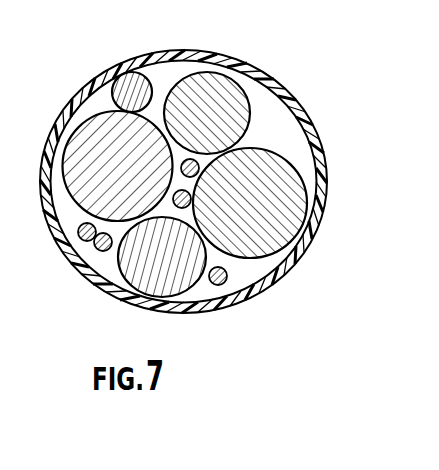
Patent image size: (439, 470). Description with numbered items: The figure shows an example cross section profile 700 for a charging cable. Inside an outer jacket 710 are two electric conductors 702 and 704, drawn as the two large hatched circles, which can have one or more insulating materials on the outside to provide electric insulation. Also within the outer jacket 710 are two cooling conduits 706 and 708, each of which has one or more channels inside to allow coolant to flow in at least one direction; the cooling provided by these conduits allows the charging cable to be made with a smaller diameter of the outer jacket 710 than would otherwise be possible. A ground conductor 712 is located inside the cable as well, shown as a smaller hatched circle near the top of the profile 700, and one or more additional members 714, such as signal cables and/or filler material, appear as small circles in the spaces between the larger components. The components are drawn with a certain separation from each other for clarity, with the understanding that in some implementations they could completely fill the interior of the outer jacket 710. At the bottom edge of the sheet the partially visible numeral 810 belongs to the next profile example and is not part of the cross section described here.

The cable assembly 700 is at (65, 283).
The first insulated conductor 702 is at (271, 147).
The second insulated conductor 704 is at (80, 128).
The third insulated conductor 706 is at (222, 74).
The fourth insulated conductor 708 is at (195, 307).
The outer jacket 710 is at (329, 200).
The optical fiber element 712 is at (148, 76).
The filler strand 714 is at (228, 276).
The element of FIG. 8 (partially shown) 810 is at (277, 460).